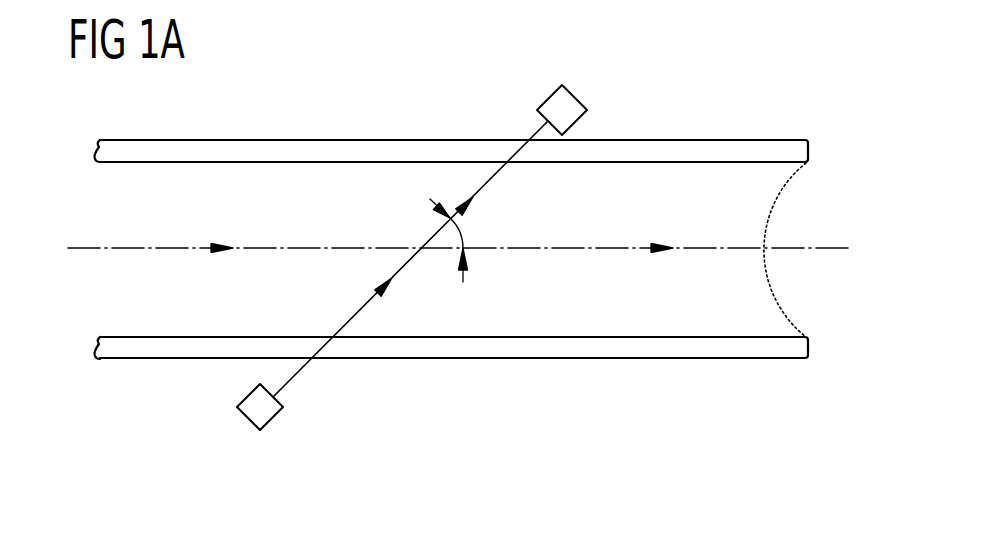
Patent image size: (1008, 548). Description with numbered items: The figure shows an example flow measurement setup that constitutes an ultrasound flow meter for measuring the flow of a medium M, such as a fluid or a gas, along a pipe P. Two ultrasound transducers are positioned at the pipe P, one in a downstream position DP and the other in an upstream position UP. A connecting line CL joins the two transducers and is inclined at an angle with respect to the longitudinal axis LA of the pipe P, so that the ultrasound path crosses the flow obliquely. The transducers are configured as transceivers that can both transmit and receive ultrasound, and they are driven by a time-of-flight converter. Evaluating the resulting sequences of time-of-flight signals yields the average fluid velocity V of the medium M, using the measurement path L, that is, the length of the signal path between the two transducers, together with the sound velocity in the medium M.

The pipe P is at (717, 149).
The medium M is at (211, 178).
The longitudinal axis LA is at (833, 250).
The average fluid velocity V is at (182, 252).
The measurement path L is at (620, 252).
The connecting line CL is at (363, 300).
The upstream position UP is at (542, 110).
The downstream position DP is at (260, 426).